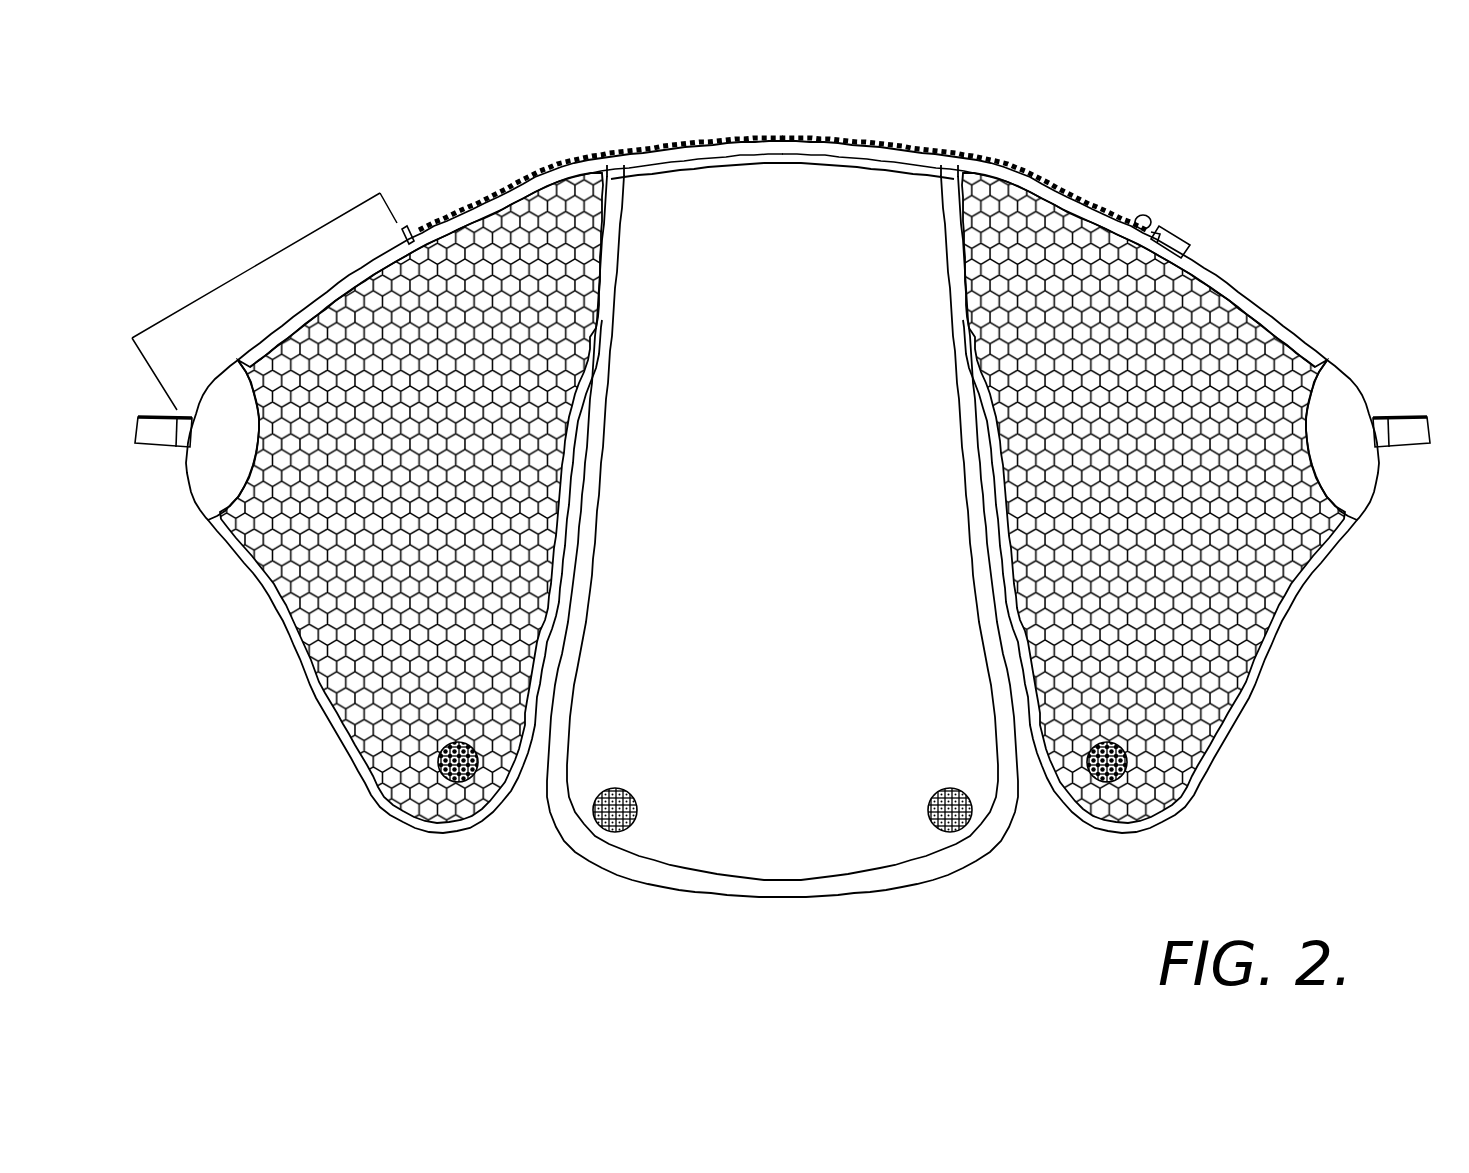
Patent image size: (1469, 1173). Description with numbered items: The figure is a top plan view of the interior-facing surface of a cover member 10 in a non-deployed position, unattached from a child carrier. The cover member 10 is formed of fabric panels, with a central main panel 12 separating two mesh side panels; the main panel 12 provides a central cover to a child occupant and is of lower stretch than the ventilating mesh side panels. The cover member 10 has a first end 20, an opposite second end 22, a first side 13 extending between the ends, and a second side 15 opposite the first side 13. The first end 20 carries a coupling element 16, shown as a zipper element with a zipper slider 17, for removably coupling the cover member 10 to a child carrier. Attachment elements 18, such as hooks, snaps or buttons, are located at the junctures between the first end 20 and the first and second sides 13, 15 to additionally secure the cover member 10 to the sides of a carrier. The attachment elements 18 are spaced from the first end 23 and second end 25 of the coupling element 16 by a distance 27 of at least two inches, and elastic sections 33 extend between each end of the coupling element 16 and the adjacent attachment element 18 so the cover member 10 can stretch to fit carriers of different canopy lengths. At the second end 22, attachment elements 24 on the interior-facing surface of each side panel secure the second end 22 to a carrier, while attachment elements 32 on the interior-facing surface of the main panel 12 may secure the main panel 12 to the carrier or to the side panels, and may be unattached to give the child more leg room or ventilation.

The cover member 10 is at (1264, 233).
The main panel 12 is at (773, 802).
The first side 13 is at (189, 505).
The second side 15 is at (1377, 505).
The coupling element 16 is at (925, 148).
The zipper slider 17 is at (1143, 214).
The attachment elements 18 is at (137, 430).
The first end 20 is at (818, 122).
The second end 22 is at (879, 902).
The first end of coupling element 23 is at (402, 236).
The attachment elements 24 is at (452, 782).
The second end of coupling element 25 is at (1175, 232).
The distance 27 is at (262, 270).
The attachment elements 32 is at (618, 832).
The elastic sections 33 is at (1270, 303).